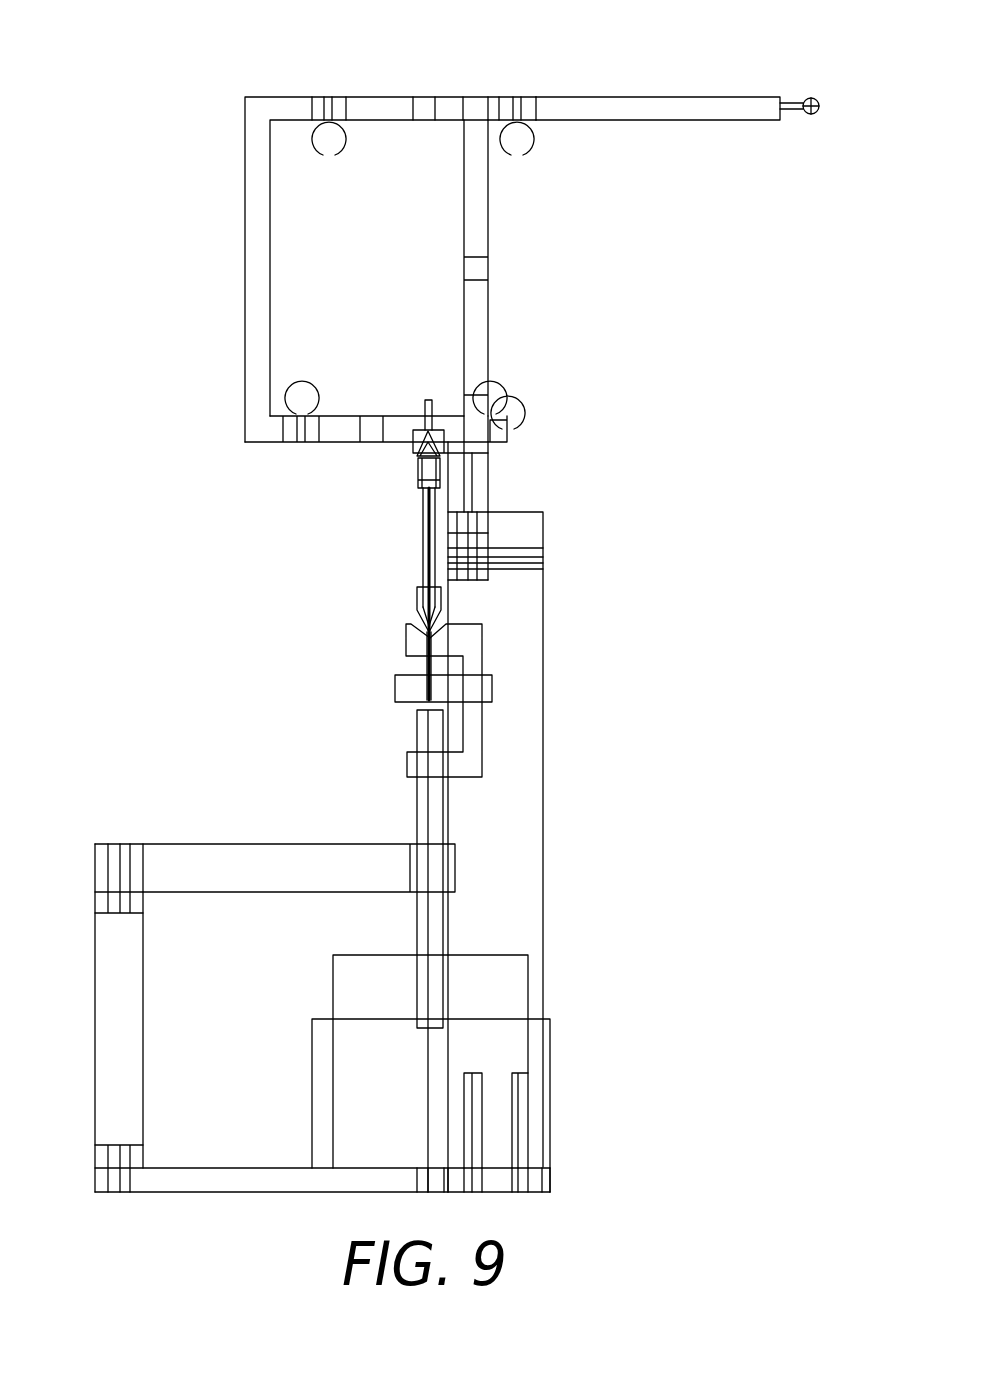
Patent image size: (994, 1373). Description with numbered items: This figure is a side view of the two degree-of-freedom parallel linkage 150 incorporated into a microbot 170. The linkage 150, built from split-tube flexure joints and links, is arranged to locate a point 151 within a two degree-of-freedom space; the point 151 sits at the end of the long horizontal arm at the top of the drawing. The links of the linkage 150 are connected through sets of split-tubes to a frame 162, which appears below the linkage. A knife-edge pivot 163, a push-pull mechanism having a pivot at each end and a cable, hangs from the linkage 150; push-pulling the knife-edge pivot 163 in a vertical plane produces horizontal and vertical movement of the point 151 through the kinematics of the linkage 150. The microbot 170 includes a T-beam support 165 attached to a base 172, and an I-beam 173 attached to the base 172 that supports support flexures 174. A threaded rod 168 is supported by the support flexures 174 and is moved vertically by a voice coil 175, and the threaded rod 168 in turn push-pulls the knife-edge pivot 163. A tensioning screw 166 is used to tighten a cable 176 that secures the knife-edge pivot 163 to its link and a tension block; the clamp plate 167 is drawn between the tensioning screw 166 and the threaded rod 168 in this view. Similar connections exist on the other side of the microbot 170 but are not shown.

The two degree-of-freedom parallel linkage 150 is at (204, 213).
The point 151 is at (819, 104).
The frame 162 is at (490, 466).
The knife-edge pivot 163 is at (412, 526).
The T-beam support 165 is at (543, 715).
The tensioning screw 166 is at (406, 643).
The clamp plate 167 is at (395, 690).
The threaded rod 168 is at (416, 800).
The microbot 170 is at (786, 51).
The base 172 is at (222, 1193).
The I-beam 173 is at (95, 1068).
The support flexures 174 is at (215, 843).
The voice coil 175 is at (395, 955).
The cable 176 is at (424, 400).